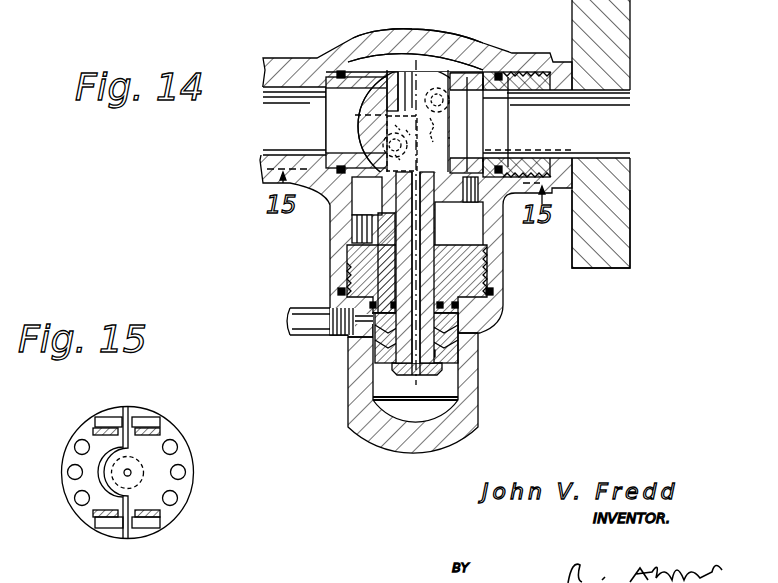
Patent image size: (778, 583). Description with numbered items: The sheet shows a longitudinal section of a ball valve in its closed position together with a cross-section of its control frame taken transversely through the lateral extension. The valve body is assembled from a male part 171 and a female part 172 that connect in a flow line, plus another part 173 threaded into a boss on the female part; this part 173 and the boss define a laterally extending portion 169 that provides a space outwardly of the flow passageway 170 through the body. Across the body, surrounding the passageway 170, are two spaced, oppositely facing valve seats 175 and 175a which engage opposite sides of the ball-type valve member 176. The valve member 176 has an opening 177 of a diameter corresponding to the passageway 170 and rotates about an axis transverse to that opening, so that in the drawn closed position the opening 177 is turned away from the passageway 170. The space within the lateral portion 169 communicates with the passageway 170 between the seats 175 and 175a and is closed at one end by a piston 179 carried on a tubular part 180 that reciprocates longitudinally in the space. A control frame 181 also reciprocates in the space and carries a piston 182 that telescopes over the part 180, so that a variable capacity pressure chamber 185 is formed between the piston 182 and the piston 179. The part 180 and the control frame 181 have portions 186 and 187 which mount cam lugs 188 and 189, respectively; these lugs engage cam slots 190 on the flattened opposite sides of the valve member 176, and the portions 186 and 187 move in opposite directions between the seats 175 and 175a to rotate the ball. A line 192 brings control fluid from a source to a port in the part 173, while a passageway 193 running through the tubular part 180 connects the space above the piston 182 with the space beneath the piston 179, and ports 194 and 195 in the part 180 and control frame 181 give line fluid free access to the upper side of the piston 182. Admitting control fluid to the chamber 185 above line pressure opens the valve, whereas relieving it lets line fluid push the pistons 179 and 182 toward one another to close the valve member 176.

In FIG. 14, the laterally extending portion 169 is at (507, 302).
In FIG. 14, the passageway 170 is at (620, 156).
In FIG. 14, the male part 171 is at (631, 30).
In FIG. 14, the female part 172 is at (365, 43).
In FIG. 14, the laterally extending part 173 is at (479, 406).
In FIG. 14, the valve seat 175 is at (413, 72).
In FIG. 14, the valve seat 175a is at (343, 142).
In FIG. 14, the ball-type valve member 176 is at (488, 127).
In FIG. 14, the opening 177 is at (452, 32).
In FIG. 14, the piston 179 is at (458, 369).
In FIG. 14, the tubular part 180 is at (455, 264).
In FIG. 15, the tubular part 180 is at (100, 483).
In FIG. 14, the control frame 181 is at (390, 262).
In FIG. 15, the control frame 181 is at (62, 508).
In FIG. 14, the piston 182 is at (483, 328).
In FIG. 14, the variable capacity pressure chamber 185 is at (375, 318).
In FIG. 14, the portion 186 is at (475, 150).
In FIG. 15, the portion 186 is at (143, 408).
In FIG. 14, the portion 187 is at (387, 125).
In FIG. 15, the portion 187 is at (110, 530).
In FIG. 15, the cam lug 188 is at (157, 432).
In FIG. 15, the cam lug 189 is at (95, 430).
In FIG. 14, the cam slot 190 is at (423, 146).
In FIG. 14, the line 192 is at (303, 312).
In FIG. 14, the passageway 193 is at (278, 6).
In FIG. 15, the passageway 193 is at (131, 472).
In FIG. 14, the port 194 is at (468, 206).
In FIG. 15, the port 194 is at (186, 472).
In FIG. 14, the port 195 is at (366, 215).
In FIG. 15, the port 195 is at (67, 472).